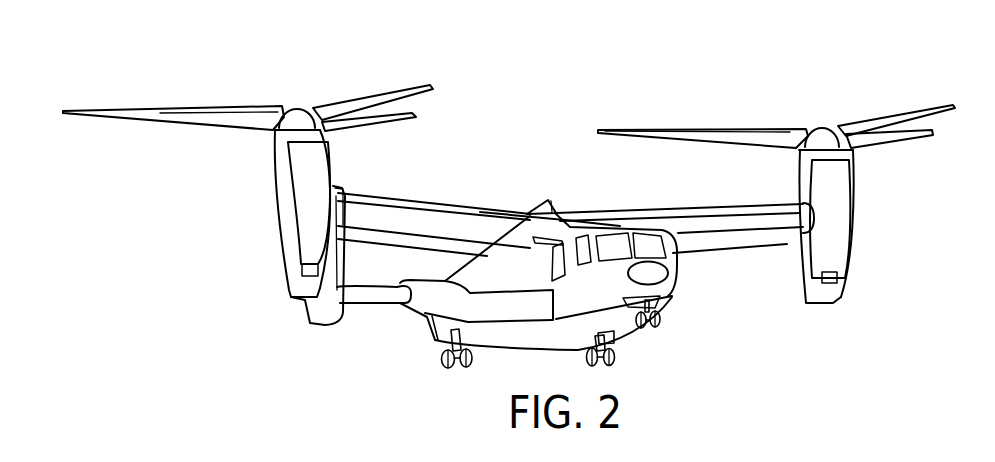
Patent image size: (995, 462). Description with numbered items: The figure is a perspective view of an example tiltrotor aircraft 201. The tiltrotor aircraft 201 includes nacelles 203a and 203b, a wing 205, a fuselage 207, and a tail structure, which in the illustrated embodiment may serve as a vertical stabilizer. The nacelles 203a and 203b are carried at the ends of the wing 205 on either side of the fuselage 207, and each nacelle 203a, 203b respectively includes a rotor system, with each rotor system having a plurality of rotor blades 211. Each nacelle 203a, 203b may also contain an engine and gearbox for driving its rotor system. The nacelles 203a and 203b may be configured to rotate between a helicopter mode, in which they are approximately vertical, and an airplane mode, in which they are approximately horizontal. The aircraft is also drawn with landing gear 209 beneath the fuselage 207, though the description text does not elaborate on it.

The tiltrotor aircraft 201 is at (634, 78).
The nacelle 203a is at (249, 216).
The nacelle 203b is at (862, 236).
The wing 205 is at (473, 208).
The fuselage 207 is at (678, 287).
The landing gear 209 is at (442, 361).
The rotor blades 211 is at (379, 94).